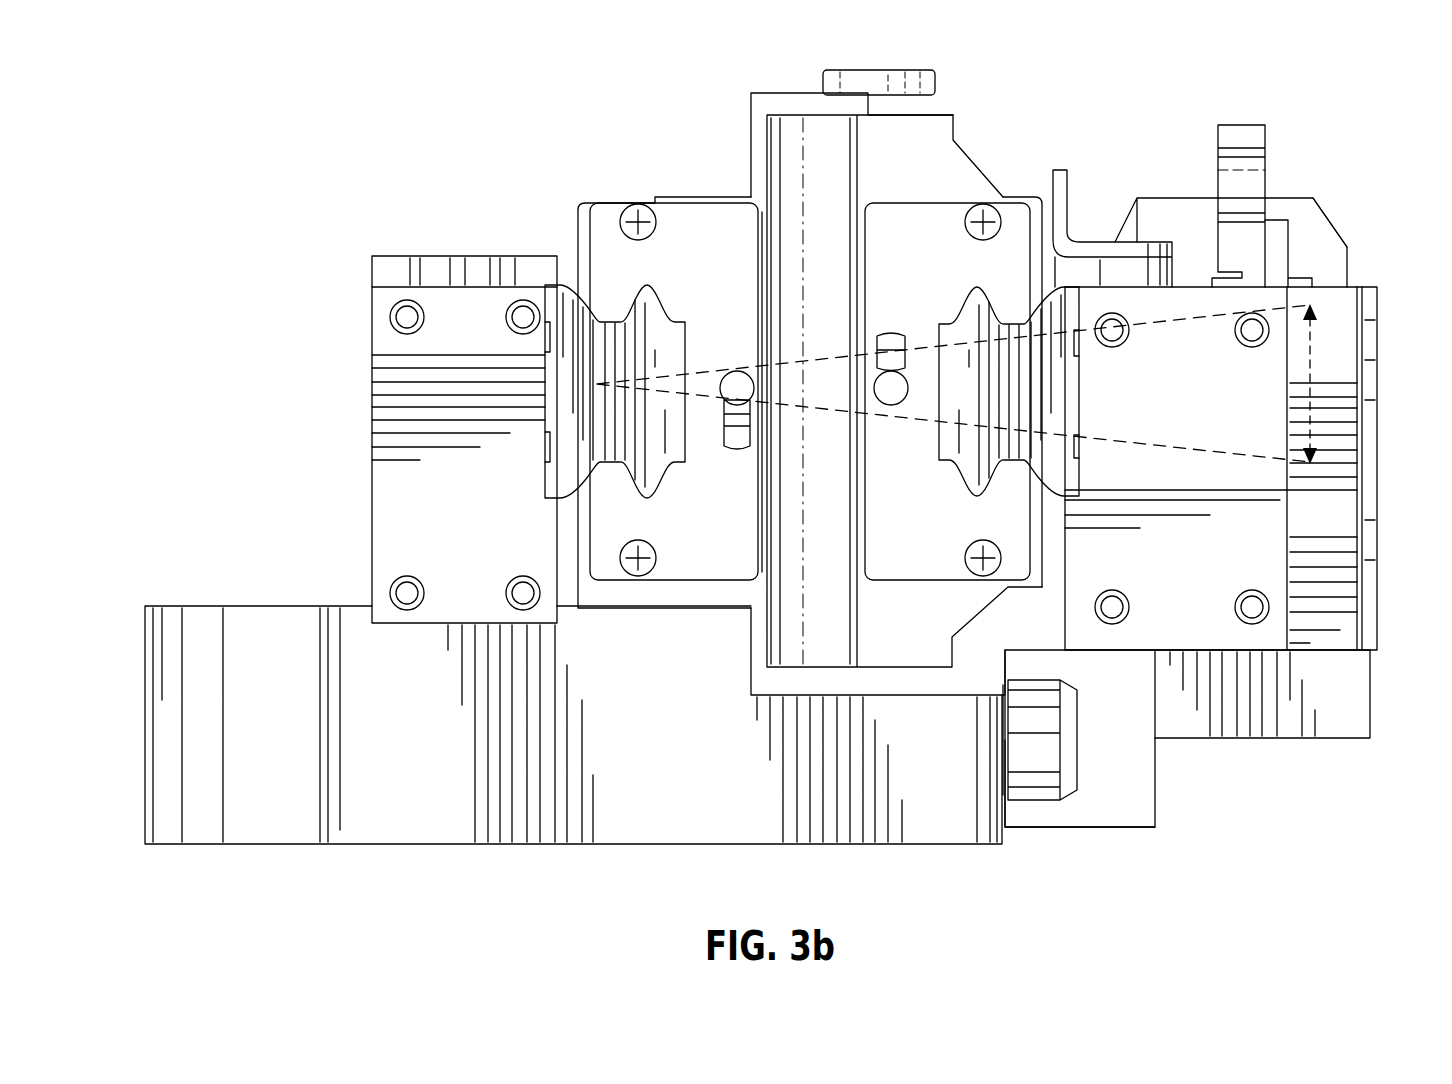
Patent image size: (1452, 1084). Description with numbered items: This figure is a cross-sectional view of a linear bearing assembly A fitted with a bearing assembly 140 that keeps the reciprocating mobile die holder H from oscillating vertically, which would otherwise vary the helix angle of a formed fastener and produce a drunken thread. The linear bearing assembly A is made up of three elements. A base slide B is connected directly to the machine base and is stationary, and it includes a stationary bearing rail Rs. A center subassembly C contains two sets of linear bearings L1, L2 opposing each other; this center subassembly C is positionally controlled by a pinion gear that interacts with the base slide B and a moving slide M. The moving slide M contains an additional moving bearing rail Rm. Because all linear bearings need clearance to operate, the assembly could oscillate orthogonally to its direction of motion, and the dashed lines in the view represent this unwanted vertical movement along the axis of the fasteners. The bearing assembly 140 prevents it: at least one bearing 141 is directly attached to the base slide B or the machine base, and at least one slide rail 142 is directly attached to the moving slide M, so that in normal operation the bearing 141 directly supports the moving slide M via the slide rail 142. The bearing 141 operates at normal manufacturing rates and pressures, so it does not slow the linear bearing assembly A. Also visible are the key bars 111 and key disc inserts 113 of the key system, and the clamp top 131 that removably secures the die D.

The linear bearing assembly A is at (420, 110).
The base slide B is at (443, 443).
The center subassembly C is at (748, 88).
The stationary bearing rail Rs is at (562, 302).
The moving bearing rail Rm is at (1065, 302).
The linear bearings L1 is at (612, 322).
The linear bearings L2 is at (997, 317).
The mobile die holder H is at (1273, 372).
The die D is at (1377, 482).
The moving slide M is at (1353, 720).
The key bars 111 is at (1273, 246).
The key disc inserts 113 is at (1252, 142).
The clamp top 131 is at (1328, 260).
The bearing assembly 140 is at (1066, 840).
The bearing 141 is at (1052, 765).
The slide rail 142 is at (1138, 813).